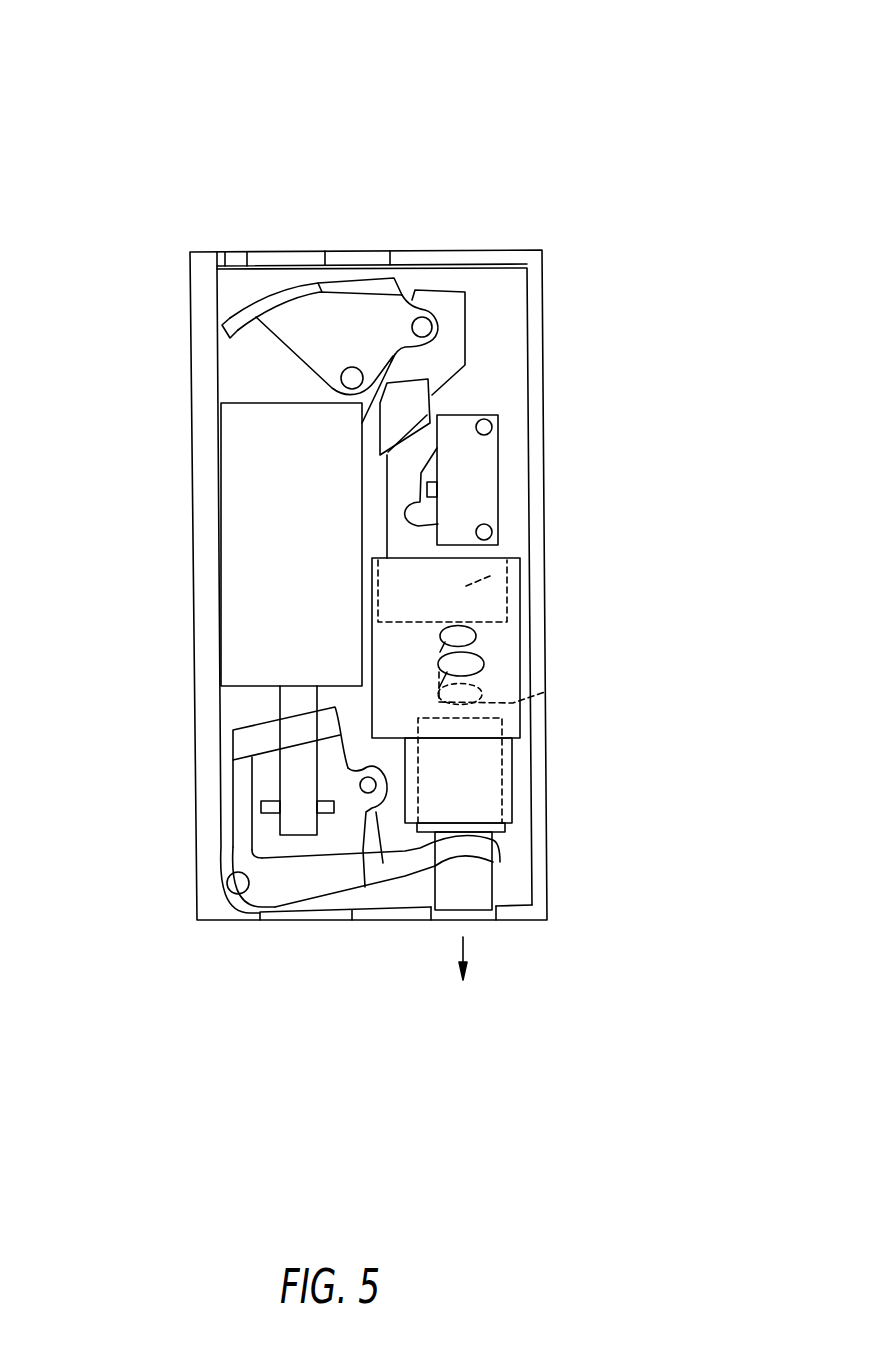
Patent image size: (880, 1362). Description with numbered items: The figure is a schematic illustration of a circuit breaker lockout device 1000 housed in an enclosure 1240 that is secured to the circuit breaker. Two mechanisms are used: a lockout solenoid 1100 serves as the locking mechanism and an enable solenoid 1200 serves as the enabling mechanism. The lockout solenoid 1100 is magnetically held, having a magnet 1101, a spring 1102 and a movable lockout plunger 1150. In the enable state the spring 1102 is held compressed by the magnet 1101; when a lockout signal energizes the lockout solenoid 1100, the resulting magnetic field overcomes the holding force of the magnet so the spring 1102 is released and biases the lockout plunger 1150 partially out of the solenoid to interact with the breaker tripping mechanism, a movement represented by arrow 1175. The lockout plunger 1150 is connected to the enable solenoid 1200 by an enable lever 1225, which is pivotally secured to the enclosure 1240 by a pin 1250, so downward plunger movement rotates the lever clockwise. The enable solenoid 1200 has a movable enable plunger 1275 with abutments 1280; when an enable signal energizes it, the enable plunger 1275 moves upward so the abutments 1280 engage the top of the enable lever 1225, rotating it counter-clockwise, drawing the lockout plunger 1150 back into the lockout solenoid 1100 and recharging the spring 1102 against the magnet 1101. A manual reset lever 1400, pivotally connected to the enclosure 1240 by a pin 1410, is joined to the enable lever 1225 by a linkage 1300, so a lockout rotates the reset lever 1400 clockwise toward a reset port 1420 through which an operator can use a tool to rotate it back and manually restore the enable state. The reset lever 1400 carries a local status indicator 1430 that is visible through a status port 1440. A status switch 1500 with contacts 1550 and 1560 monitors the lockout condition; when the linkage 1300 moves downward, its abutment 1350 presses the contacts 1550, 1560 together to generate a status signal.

The lockout device 1000 is at (618, 71).
The reset port 1420 is at (232, 260).
The status port 1440 is at (348, 256).
The local status indicator 1430 is at (381, 280).
The manual reset lever 1400 is at (224, 323).
The pin 1410 is at (350, 377).
The linkage 1300 is at (448, 358).
The abutment 1350 is at (435, 408).
The status switch 1500 is at (467, 455).
The contact 1550 is at (438, 490).
The contact 1560 is at (438, 523).
The lockout solenoid 1100 is at (510, 646).
The magnet 1101 is at (548, 592).
The spring 1102 is at (548, 690).
The enable solenoid 1200 is at (272, 530).
The enclosure 1240 is at (207, 724).
The enable plunger 1275 is at (292, 779).
The abutments 1280 is at (270, 812).
The pin 1250 is at (238, 883).
The enable lever 1225 is at (332, 877).
The lockout plunger 1150 is at (480, 888).
The plunger movement 1175 is at (463, 948).